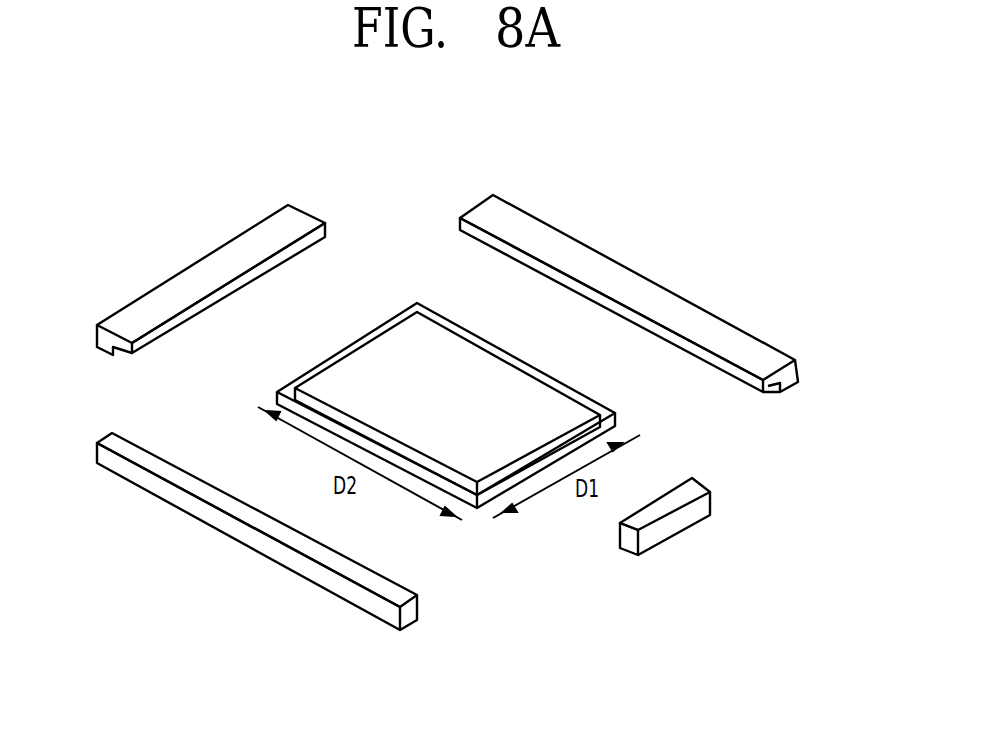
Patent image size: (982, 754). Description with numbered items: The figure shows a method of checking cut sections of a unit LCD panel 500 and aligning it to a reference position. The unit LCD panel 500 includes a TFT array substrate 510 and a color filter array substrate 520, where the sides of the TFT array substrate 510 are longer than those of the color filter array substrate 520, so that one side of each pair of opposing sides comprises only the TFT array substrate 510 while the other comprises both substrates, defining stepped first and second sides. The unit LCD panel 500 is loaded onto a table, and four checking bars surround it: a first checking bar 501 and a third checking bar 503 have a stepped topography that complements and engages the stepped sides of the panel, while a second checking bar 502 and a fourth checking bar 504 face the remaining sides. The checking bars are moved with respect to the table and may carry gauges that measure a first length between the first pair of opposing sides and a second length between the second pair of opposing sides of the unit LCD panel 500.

The unit LCD panel 500 is at (446, 382).
The TFT array substrate 510 is at (314, 367).
The color filter array substrate 520 is at (358, 357).
The first checking bar 501 is at (717, 323).
The second checking bar 502 is at (225, 537).
The third checking bar 503 is at (190, 268).
The fourth checking bar 504 is at (675, 527).